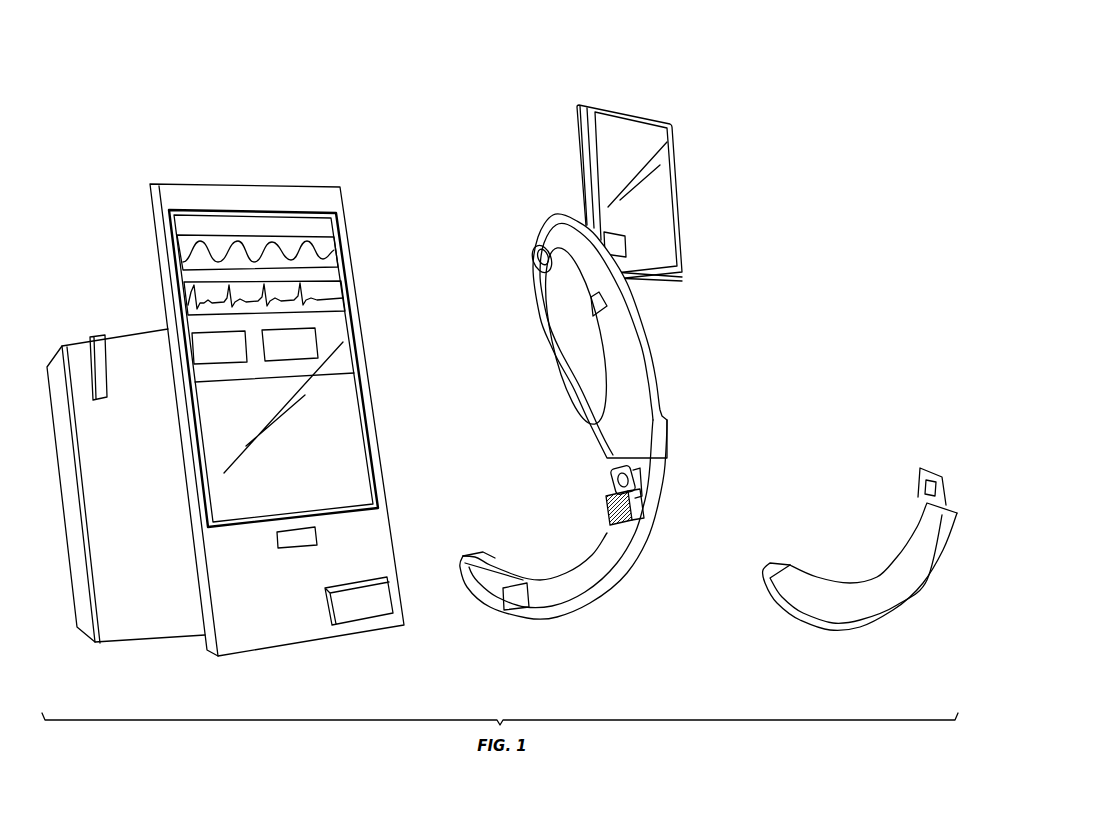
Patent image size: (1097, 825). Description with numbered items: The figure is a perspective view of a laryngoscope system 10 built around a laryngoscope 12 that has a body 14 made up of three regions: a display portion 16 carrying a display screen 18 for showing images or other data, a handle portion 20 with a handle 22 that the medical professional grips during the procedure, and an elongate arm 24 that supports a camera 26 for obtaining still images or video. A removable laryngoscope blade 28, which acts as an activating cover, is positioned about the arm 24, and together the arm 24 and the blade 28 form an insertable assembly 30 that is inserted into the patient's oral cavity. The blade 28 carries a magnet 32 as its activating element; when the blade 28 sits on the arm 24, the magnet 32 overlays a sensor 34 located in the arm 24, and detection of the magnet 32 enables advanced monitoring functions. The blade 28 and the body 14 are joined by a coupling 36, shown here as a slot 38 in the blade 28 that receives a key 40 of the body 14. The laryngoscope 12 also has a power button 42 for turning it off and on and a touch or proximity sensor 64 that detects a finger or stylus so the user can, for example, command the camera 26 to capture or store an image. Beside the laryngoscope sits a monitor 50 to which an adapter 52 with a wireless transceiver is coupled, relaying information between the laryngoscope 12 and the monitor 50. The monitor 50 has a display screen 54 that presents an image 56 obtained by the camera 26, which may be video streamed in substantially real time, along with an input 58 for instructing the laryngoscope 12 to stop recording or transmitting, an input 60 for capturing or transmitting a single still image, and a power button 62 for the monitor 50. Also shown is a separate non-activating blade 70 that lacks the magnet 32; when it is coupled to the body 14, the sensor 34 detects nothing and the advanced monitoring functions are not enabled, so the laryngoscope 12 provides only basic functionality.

The laryngoscope system 10 is at (728, 81).
The laryngoscope 12 is at (712, 265).
The body 14 is at (684, 316).
The display portion 16 is at (695, 183).
The display screen 18 is at (628, 132).
The handle portion 20 is at (674, 379).
The handle 22 is at (642, 358).
The arm 24 is at (634, 586).
The camera 26 is at (528, 573).
The removable laryngoscope blade 28 is at (472, 553).
The insertable assembly 30 is at (606, 616).
The magnet 32 is at (633, 505).
The sensor 34 is at (627, 521).
The coupling 36 is at (599, 482).
The slot 38 is at (613, 480).
The key 40 is at (637, 488).
The power button 42 is at (533, 262).
The monitor 50 is at (245, 175).
The adapter 52 is at (358, 587).
The display screen 54 is at (340, 354).
The image 56 is at (338, 426).
The input 58 is at (195, 349).
The input 60 is at (318, 345).
The power button 62 is at (297, 549).
The touch or proximity sensor 64 is at (626, 247).
The non-activating blade 70 is at (827, 536).